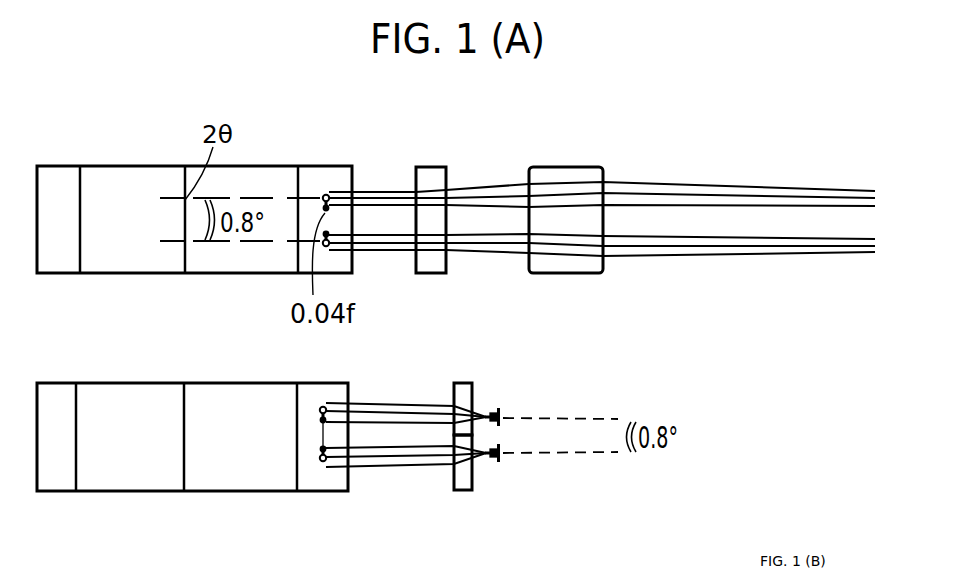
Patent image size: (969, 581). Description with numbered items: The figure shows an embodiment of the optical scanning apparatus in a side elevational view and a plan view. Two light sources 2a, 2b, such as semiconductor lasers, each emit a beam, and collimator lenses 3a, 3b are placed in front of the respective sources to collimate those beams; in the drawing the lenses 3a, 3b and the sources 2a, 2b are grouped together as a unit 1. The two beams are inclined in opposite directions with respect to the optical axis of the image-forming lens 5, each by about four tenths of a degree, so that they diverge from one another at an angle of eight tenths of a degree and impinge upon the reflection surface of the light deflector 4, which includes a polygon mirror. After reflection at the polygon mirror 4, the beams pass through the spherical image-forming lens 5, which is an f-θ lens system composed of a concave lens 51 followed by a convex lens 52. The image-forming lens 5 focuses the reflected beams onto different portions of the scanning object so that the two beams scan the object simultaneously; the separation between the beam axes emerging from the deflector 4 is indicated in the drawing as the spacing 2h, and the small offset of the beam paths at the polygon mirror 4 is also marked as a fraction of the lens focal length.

In FIG. 1B, the light receiving unit 1 is at (487, 453).
In FIG. 1B, the light source 2a is at (503, 408).
In FIG. 1B, the light source 2b is at (507, 481).
In FIG. 1A, the spacing between beam axes 2h is at (415, 218).
In FIG. 1B, the collimator lens 3a is at (464, 385).
In FIG. 1B, the collimator lens 3b is at (460, 478).
In FIG. 1A, the light deflector 4 is at (123, 180).
In FIG. 1B, the light deflector 4 is at (118, 395).
In FIG. 1A, the spherical image-forming lens 5 is at (509, 173).
In FIG. 1A, the concave lens 51 is at (432, 172).
In FIG. 1A, the convex lens 52 is at (566, 196).